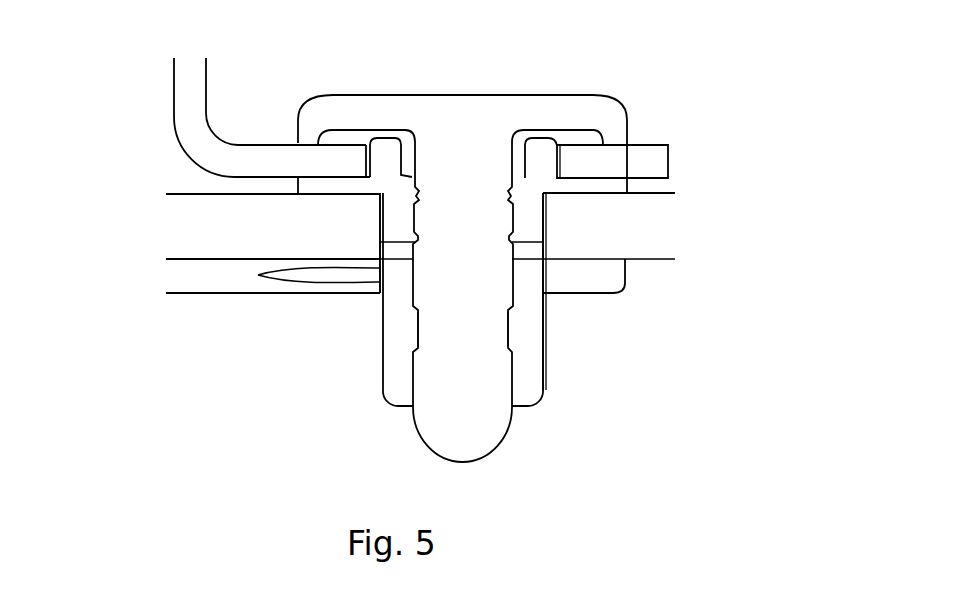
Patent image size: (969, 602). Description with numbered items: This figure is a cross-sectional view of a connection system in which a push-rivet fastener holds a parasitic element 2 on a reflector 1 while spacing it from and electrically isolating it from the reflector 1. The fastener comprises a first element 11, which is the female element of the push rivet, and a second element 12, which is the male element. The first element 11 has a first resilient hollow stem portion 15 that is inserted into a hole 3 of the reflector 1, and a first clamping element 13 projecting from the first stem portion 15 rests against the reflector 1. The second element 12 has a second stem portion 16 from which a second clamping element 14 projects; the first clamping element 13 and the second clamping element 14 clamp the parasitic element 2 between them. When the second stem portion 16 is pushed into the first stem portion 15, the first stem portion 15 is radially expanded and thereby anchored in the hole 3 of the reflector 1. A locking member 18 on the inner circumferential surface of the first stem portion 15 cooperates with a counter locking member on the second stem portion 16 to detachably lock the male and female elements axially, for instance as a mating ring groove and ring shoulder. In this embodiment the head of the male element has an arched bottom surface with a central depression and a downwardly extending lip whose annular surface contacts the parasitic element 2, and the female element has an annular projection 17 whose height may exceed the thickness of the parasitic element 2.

The reflector 1 is at (212, 233).
The parasitic element 2 is at (187, 94).
The hole 3 is at (543, 242).
The first element 11 is at (400, 297).
The second element 12 is at (443, 115).
The first clamping element 13 is at (613, 185).
The second clamping element 14 is at (620, 133).
The first stem portion 15 is at (532, 370).
The second stem portion 16 is at (482, 428).
The annular projection 17 is at (537, 152).
The locking member 18 is at (417, 328).